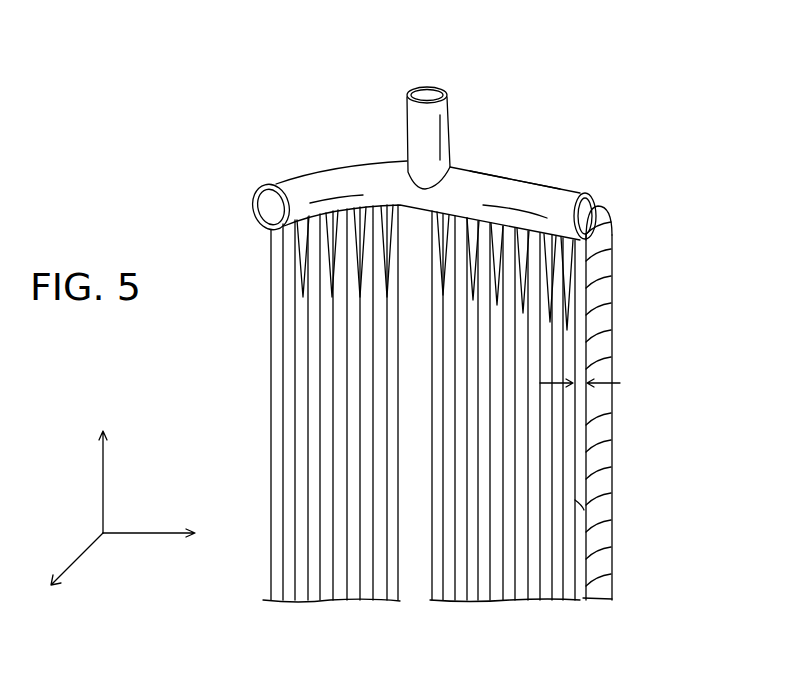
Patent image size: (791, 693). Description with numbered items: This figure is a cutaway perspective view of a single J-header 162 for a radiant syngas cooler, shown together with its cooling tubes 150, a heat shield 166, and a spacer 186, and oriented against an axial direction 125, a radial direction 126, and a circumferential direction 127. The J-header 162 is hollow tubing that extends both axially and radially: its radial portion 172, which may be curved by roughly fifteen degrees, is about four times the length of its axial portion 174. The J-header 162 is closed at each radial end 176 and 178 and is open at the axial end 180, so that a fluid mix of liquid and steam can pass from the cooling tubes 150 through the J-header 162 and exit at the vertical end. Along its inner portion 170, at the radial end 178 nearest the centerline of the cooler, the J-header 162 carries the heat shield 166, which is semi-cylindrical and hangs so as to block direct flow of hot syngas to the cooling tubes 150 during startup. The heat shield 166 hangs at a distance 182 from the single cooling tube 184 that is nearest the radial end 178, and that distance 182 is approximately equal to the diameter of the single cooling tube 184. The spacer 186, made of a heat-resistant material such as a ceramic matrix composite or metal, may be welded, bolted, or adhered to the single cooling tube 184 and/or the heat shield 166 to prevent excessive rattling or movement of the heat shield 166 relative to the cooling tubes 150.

The J-header 162 is at (330, 167).
The radial end 176 is at (254, 196).
The inner portion 170 is at (580, 191).
The radial portion 172 is at (522, 177).
The axial portion 174 is at (448, 130).
The axial end 180 is at (425, 87).
The radial end 178 is at (592, 212).
The heat shield 166 is at (607, 313).
The cooling tubes 150 is at (276, 316).
The single cooling tube 184 is at (555, 596).
The distance 182 is at (617, 385).
The spacer 186 is at (586, 512).
The axial direction 125 is at (108, 483).
The radial direction 126 is at (140, 538).
The circumferential direction 127 is at (92, 548).